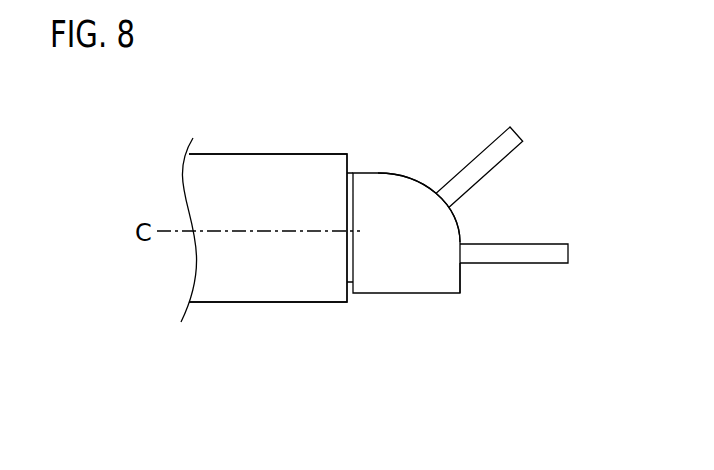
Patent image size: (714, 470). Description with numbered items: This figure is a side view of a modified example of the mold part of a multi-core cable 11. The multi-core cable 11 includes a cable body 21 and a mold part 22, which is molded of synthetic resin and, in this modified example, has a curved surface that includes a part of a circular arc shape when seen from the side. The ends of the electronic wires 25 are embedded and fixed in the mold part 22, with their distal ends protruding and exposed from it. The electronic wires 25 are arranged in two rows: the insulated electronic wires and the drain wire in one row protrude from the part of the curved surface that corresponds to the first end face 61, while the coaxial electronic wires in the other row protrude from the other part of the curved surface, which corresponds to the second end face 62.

The multi-core cable 11 is at (297, 136).
The cable body 21 is at (242, 303).
The mold part 22 is at (397, 293).
The electronic wires 25 is at (483, 150).
The first end face 61 is at (423, 190).
The second end face 62 is at (463, 268).